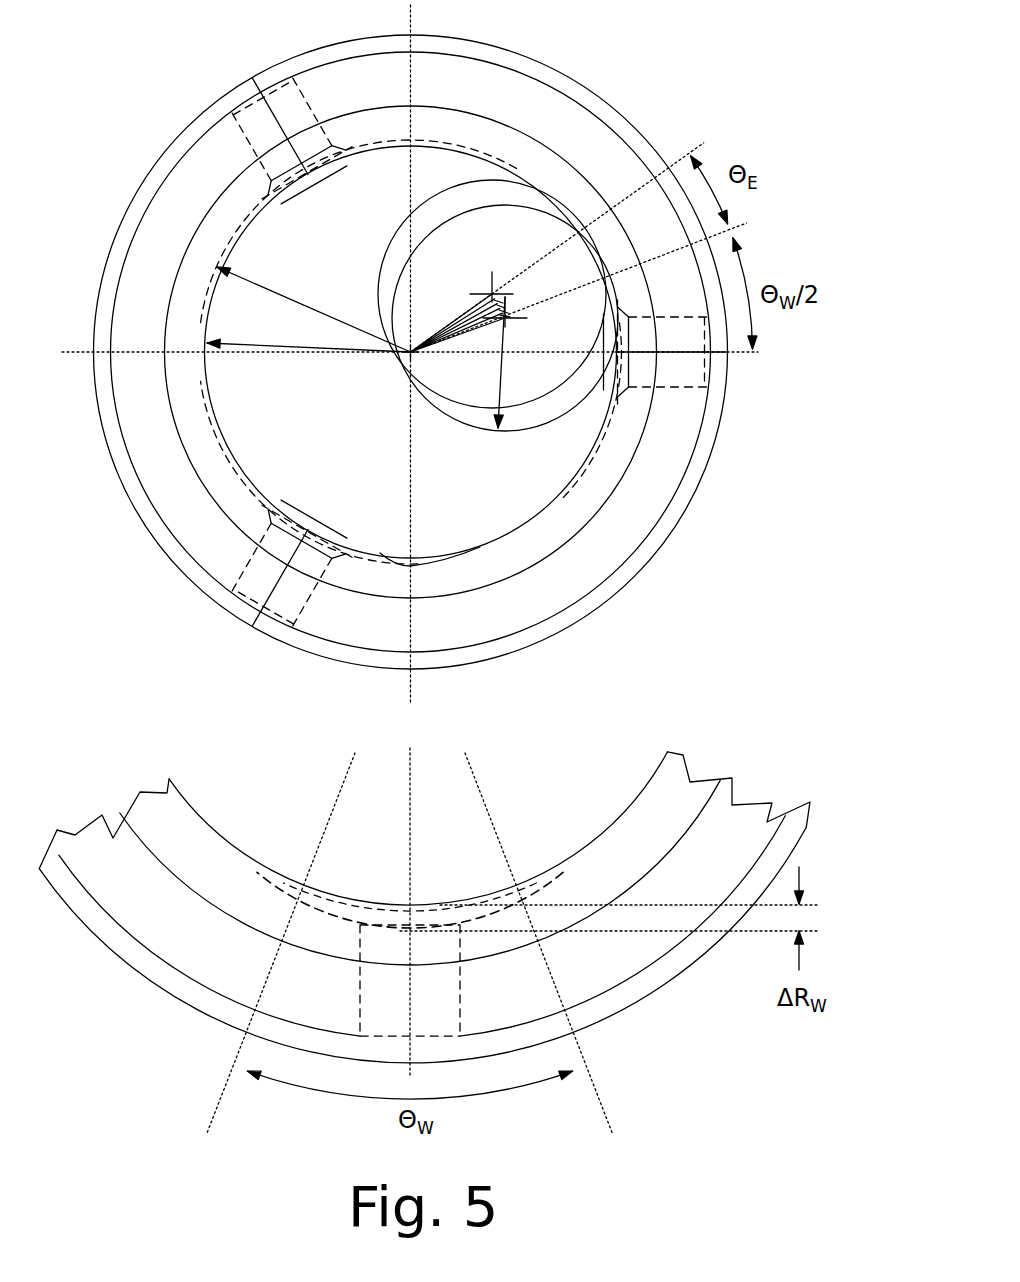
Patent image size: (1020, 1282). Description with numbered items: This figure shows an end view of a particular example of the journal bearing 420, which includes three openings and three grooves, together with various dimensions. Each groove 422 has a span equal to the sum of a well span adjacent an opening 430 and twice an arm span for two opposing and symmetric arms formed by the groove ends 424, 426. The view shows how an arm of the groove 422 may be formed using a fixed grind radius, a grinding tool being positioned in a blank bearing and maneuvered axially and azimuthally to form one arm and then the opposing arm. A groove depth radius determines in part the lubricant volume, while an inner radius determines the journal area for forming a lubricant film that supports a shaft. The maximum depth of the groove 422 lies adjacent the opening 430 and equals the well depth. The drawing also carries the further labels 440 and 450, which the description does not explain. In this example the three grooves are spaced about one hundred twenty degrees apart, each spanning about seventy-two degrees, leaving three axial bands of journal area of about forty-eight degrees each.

The bearing 420 is at (138, 80).
The groove 422 is at (248, 212).
The groove end 424 is at (210, 262).
The groove end 426 is at (440, 138).
The opening 430 is at (293, 72).
The outer surface 440 is at (170, 150).
The relief profile 450 is at (247, 227).